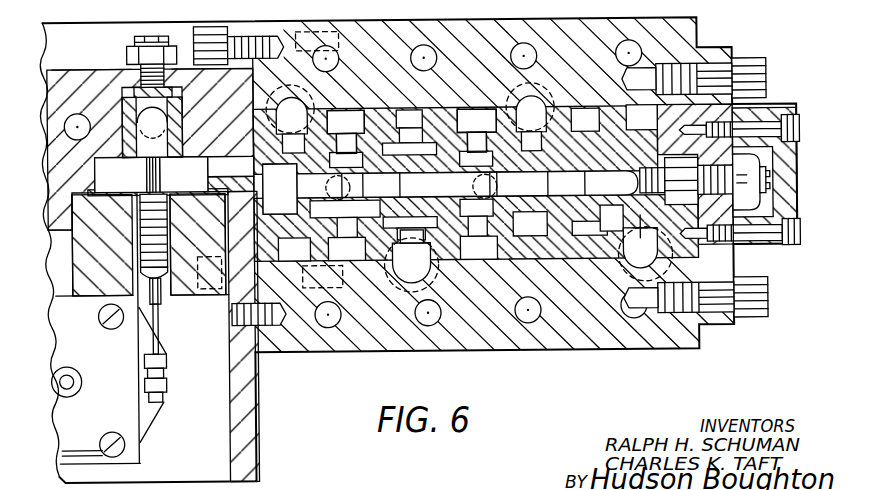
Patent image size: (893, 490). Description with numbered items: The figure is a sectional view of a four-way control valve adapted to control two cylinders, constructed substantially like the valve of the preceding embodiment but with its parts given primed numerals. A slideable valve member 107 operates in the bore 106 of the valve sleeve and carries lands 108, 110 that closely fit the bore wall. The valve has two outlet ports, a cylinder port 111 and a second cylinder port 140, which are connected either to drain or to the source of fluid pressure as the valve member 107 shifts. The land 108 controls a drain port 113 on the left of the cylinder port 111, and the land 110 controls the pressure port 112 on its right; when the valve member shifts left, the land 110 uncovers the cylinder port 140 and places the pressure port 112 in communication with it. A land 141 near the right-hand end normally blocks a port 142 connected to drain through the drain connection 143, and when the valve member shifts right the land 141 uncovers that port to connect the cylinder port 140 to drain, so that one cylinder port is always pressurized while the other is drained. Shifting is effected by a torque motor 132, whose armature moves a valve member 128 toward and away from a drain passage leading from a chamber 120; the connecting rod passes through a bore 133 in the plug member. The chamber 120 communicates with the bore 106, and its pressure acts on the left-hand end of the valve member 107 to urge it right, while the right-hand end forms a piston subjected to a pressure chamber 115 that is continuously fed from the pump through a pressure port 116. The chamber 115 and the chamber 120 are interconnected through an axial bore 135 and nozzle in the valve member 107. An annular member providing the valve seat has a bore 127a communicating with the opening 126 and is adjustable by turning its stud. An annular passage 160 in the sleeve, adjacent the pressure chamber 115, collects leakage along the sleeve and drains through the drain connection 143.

The opening 126 is at (178, 106).
The bore of annular member 127a is at (176, 134).
The chamber 120 is at (144, 173).
The valve member 128 is at (168, 162).
The bore 106 is at (256, 157).
The land 108 is at (283, 159).
The axial bore 135 is at (316, 185).
The drain port 113 is at (300, 108).
The drain connection 143 is at (508, 104).
The cylinder port 111 is at (356, 192).
The land 110 is at (410, 178).
The cylinder port 140 is at (495, 176).
The land 141 is at (548, 176).
The valve member 107 is at (584, 175).
The port 142 is at (522, 150).
The annular passage 160 is at (583, 150).
The pressure chamber 115 is at (654, 203).
The pressure port 116 is at (618, 276).
The pressure port 112 is at (428, 268).
The bore 133 is at (167, 292).
The torque motor 132 is at (140, 458).